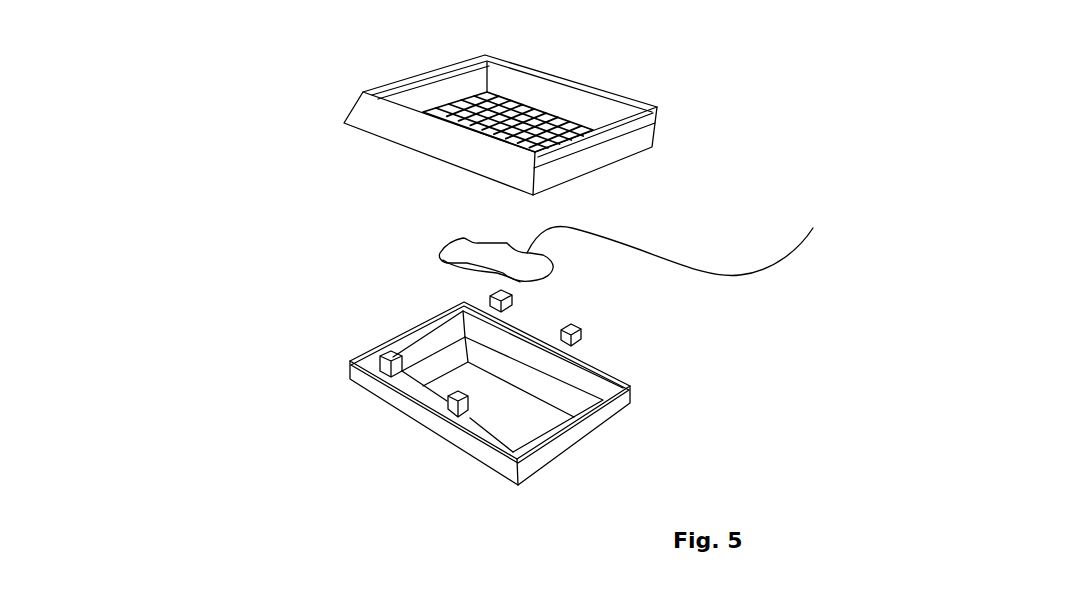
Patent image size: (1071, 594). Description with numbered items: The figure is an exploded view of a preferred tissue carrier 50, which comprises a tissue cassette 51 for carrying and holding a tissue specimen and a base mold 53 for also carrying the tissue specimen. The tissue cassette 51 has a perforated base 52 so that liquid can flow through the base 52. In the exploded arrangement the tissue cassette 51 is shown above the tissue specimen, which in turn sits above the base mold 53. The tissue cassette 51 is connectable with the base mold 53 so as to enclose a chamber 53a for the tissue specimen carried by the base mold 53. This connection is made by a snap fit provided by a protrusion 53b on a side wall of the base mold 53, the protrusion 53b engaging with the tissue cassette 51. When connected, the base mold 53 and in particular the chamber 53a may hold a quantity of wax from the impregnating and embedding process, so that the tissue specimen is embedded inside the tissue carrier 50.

The tissue carrier 50 is at (153, 228).
The tissue cassette 51 is at (542, 93).
The perforated base 52 is at (460, 102).
The base mold 53 is at (630, 390).
The chamber 53a is at (508, 418).
The protrusion 53b is at (574, 327).